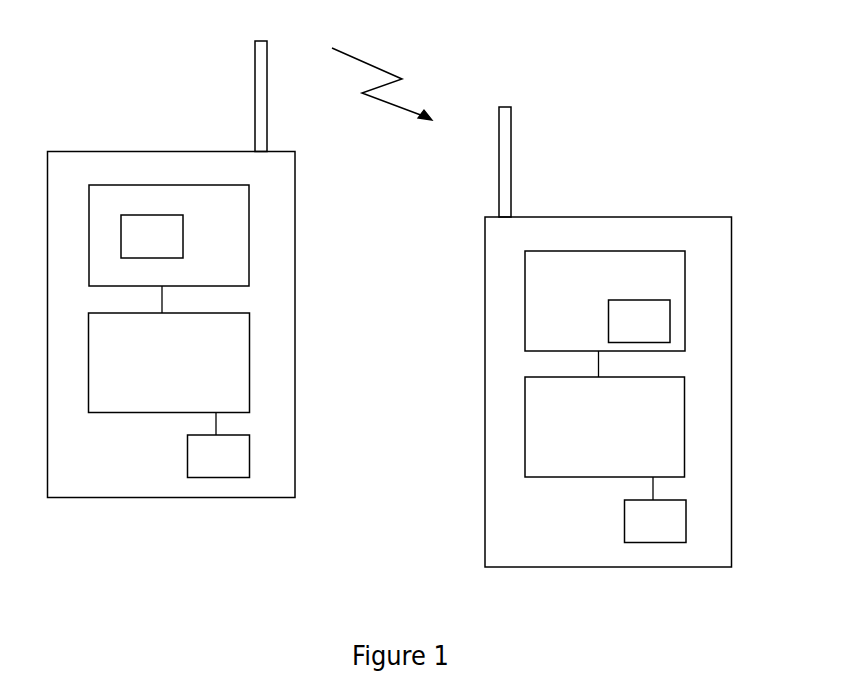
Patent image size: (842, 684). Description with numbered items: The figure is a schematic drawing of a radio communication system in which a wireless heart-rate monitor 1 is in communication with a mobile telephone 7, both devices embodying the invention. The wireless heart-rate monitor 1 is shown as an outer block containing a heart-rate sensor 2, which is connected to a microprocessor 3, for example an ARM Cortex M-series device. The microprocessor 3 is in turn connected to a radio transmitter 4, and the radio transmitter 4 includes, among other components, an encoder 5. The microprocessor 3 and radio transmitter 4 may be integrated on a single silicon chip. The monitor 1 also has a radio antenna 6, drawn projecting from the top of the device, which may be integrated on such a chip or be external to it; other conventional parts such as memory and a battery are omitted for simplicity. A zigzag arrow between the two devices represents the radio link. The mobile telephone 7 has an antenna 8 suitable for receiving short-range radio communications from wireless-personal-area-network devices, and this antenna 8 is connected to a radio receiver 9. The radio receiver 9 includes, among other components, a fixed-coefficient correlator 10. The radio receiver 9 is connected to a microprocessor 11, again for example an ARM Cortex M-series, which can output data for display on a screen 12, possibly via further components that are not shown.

The wireless heart-rate monitor 1 is at (162, 159).
The heart-rate sensor 2 is at (210, 470).
The microprocessor 3 is at (160, 378).
The radio transmitter 4 is at (237, 210).
The encoder 5 is at (144, 252).
The radio antenna 6 is at (258, 75).
The mobile telephone 7 is at (500, 537).
The antenna 8 is at (504, 123).
The radio receiver 9 is at (542, 311).
The fixed-coefficient correlator 10 is at (623, 336).
The microprocessor 11 is at (589, 444).
The screen 12 is at (639, 536).